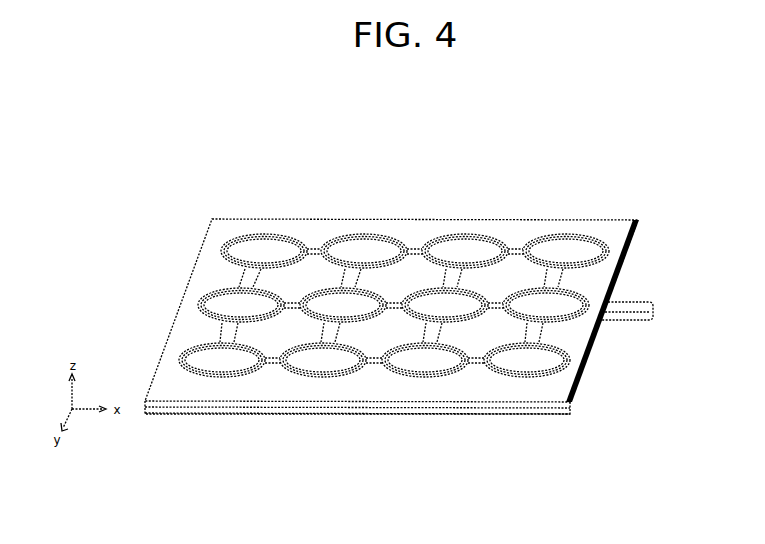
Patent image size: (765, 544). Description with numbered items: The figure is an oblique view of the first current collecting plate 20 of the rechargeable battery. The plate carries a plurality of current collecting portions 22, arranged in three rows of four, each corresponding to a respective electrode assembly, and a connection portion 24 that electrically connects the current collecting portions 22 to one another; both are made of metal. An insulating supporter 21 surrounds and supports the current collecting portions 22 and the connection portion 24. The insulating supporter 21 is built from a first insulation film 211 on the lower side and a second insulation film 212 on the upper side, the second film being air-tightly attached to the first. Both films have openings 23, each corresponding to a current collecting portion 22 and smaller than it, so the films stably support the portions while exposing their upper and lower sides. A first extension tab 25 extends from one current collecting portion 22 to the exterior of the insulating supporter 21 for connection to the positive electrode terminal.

The first current collecting plate 20 is at (420, 136).
The insulating supporter 21 is at (423, 476).
The first insulation film 211 is at (496, 416).
The second insulation film 212 is at (437, 416).
The current collecting portion 22 is at (265, 250).
The opening 23 is at (580, 243).
The connection portion 24 is at (514, 245).
The first extension tab 25 is at (642, 301).